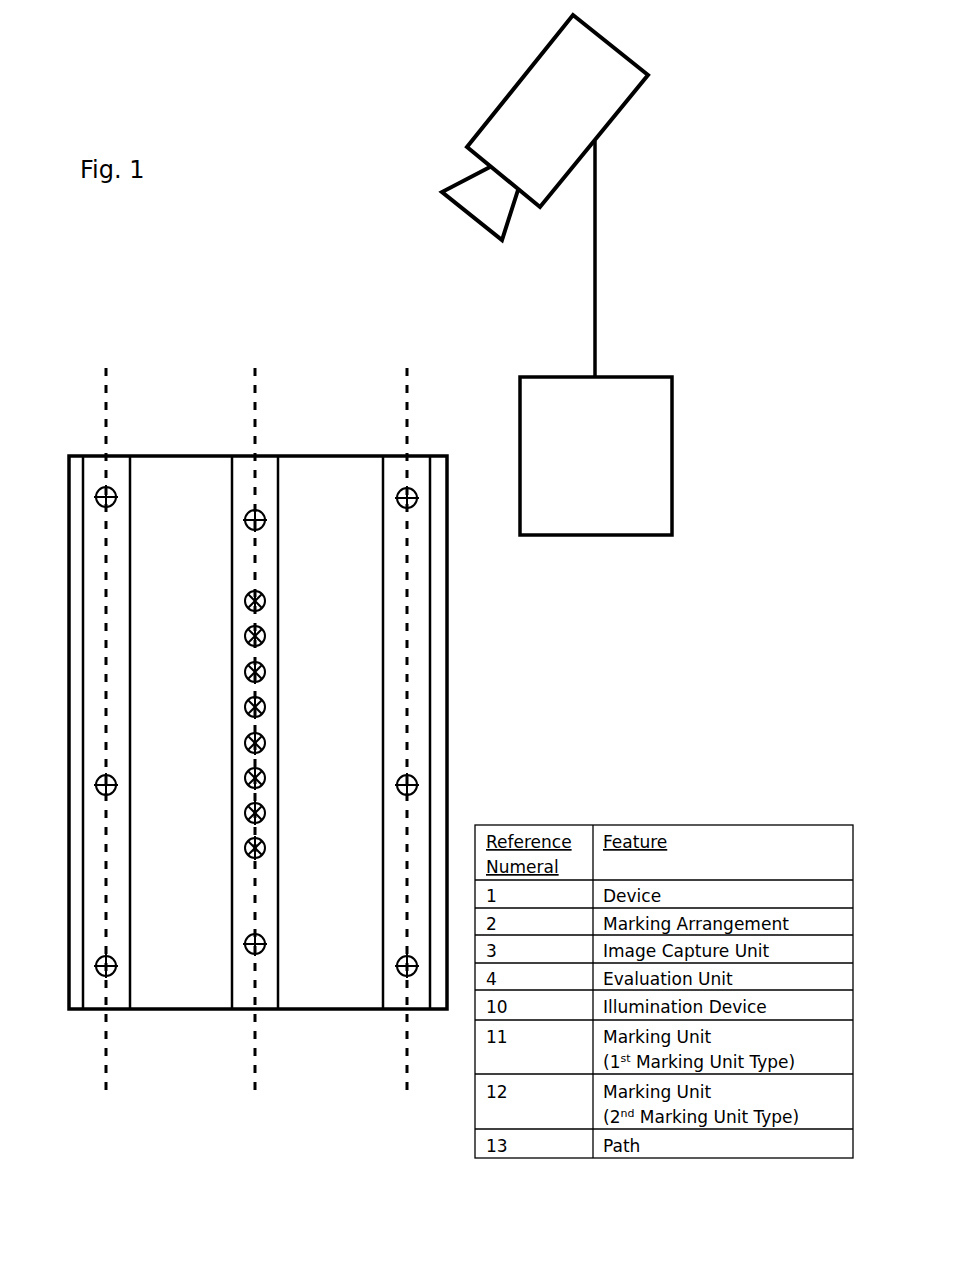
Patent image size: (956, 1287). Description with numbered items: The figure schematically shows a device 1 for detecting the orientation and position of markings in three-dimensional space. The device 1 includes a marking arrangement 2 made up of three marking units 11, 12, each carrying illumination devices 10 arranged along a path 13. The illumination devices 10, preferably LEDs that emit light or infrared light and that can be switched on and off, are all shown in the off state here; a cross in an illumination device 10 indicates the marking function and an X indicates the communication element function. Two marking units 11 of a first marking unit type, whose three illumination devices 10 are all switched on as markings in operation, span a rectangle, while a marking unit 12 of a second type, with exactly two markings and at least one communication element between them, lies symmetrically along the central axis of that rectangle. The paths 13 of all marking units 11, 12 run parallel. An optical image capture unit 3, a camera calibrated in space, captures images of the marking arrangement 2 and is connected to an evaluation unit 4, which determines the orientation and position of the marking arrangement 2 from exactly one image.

The device 1 is at (537, 680).
The marking arrangement 2 is at (168, 1012).
The optical image capture unit 3 is at (533, 90).
The evaluation unit 4 is at (600, 489).
The illumination device 10 is at (97, 495).
The marking unit of a first marking unit type 11 is at (120, 468).
The marking unit of a second marking unit type 12 is at (268, 468).
The path 13 is at (103, 393).